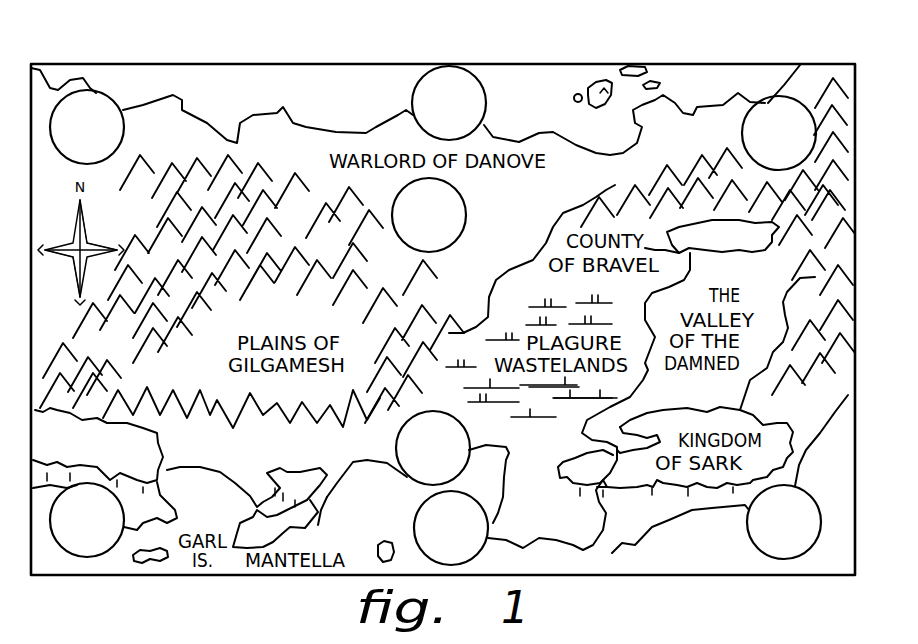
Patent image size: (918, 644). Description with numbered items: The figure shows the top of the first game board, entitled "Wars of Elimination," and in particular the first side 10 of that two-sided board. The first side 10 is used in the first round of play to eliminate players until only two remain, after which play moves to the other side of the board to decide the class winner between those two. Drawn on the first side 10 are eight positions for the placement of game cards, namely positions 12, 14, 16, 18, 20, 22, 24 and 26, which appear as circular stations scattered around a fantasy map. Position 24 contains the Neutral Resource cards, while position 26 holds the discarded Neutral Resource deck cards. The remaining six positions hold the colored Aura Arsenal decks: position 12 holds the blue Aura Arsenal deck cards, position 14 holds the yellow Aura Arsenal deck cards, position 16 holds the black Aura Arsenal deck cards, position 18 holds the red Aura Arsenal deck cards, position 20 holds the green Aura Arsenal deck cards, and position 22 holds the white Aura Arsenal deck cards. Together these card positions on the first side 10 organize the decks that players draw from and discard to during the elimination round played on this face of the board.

The first side of the game board 10 is at (88, 48).
The position for blue Aura Arsenal deck cards 12 is at (75, 557).
The position for yellow Aura Arsenal deck cards 14 is at (103, 92).
The position for black Aura Arsenal deck cards 16 is at (479, 80).
The position for red Aura Arsenal deck cards 18 is at (765, 103).
The position for green Aura Arsenal deck cards 20 is at (759, 540).
The position for white Aura Arsenal deck cards 22 is at (479, 532).
The position for Neutral Resource cards 24 is at (466, 218).
The position for discarded Neutral Resource deck cards 26 is at (413, 477).